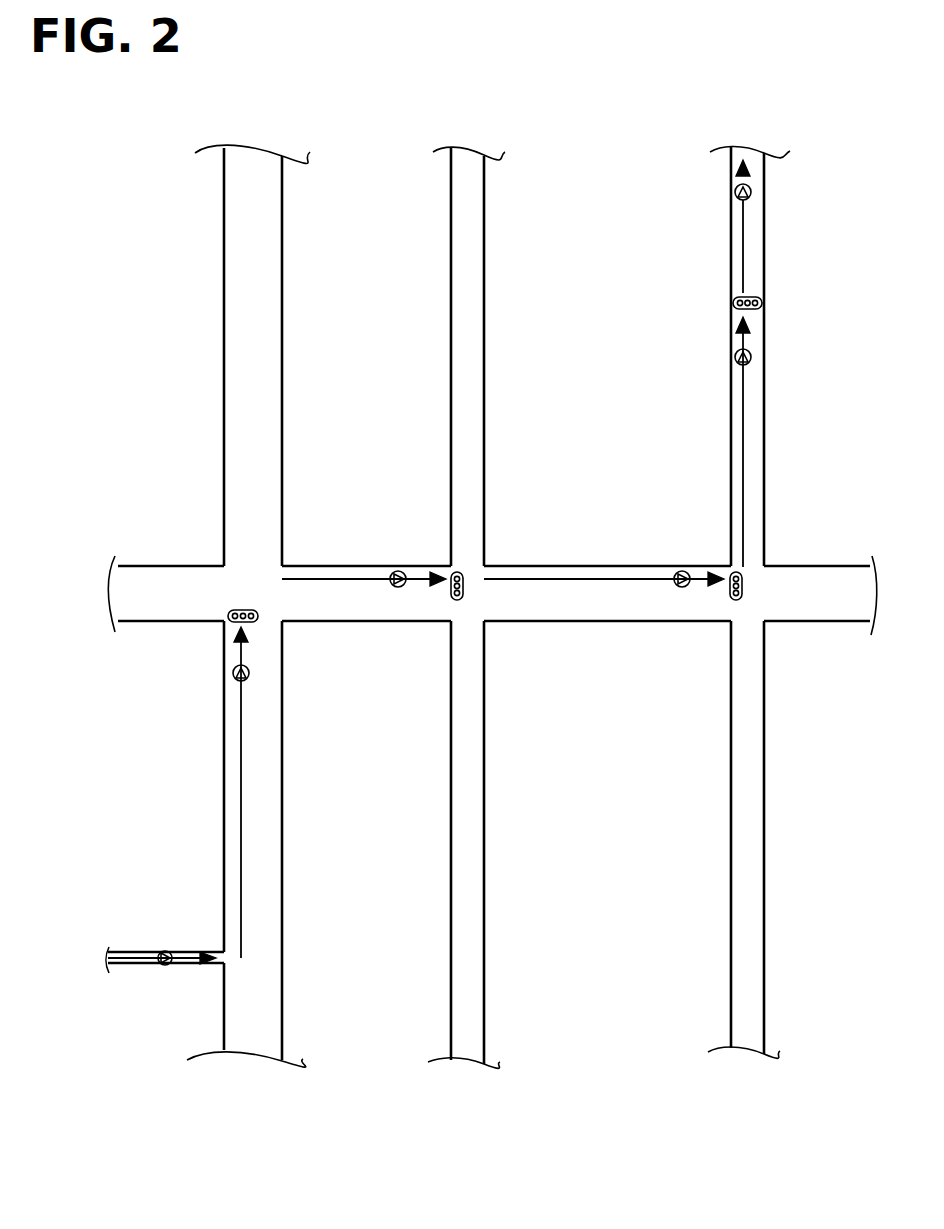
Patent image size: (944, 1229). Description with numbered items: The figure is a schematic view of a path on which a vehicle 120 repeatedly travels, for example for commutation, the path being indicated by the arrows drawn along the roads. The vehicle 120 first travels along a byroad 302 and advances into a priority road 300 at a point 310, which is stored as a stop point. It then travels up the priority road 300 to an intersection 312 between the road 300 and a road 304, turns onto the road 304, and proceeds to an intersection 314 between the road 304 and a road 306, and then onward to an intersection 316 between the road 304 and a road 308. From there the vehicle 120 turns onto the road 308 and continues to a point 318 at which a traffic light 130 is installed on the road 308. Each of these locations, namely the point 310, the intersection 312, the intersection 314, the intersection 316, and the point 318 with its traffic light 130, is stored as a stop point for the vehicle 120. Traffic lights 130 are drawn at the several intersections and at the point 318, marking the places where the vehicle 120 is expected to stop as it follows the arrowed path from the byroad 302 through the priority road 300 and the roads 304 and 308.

The vehicle 120 is at (249, 672).
The traffic light 130 is at (228, 617).
The priority road 300 is at (282, 818).
The byroad 302 is at (123, 950).
The road 304 is at (323, 563).
The road 306 is at (485, 770).
The road 308 is at (765, 765).
The point 310 is at (222, 956).
The intersection 312 is at (253, 590).
The intersection 314 is at (475, 600).
The intersection 316 is at (752, 598).
The point 318 is at (737, 316).